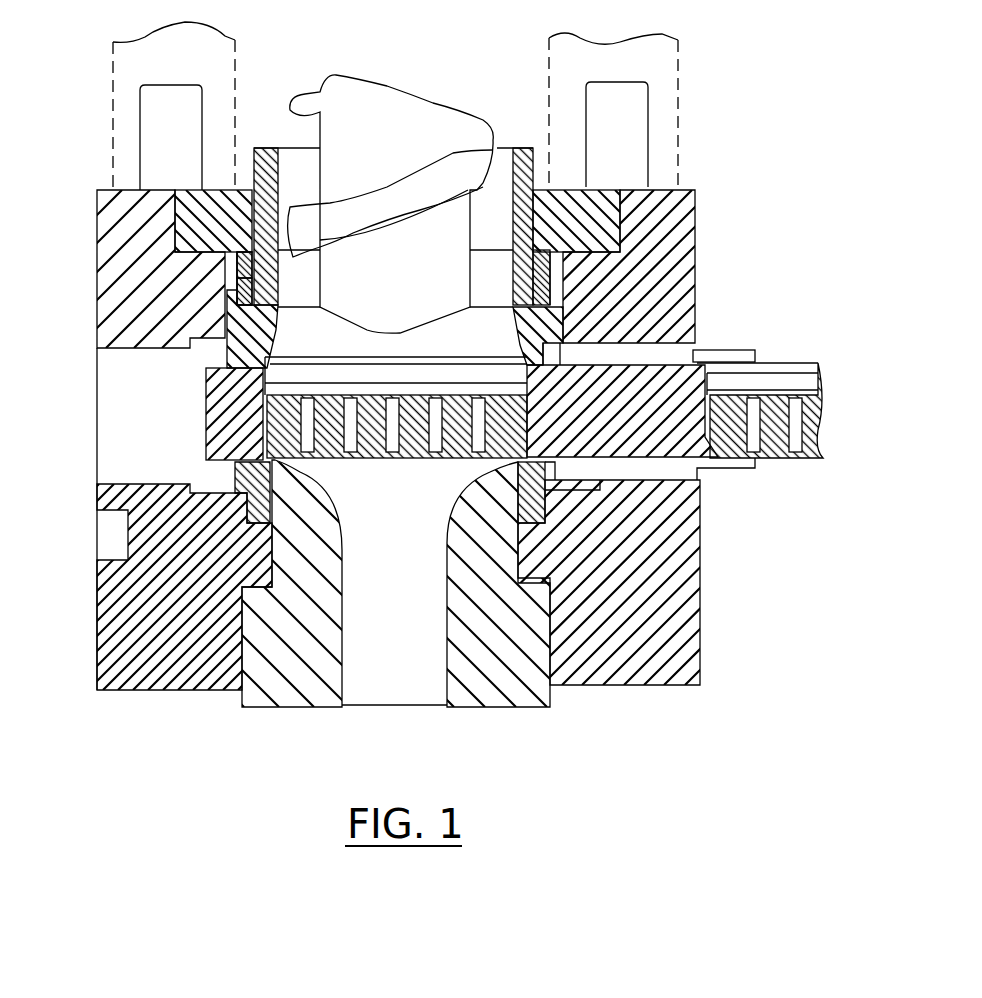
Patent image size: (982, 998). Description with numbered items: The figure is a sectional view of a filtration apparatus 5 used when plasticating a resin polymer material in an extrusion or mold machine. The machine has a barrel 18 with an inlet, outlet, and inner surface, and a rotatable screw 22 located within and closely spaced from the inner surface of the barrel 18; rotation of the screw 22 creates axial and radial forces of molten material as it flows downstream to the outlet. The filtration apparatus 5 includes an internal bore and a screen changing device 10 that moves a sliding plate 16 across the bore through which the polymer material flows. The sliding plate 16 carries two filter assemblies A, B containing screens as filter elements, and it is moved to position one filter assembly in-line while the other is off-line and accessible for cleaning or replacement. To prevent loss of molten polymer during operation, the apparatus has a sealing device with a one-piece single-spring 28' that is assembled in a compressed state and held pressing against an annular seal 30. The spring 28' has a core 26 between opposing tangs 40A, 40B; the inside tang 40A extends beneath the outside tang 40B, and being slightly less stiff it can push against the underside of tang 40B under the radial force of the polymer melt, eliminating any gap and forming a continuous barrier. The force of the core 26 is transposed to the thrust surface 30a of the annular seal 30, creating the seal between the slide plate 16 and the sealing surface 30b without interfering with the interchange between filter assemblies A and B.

The filtration apparatus 5 is at (711, 648).
The screen changing device 10 is at (824, 378).
The sliding plate 16 is at (217, 414).
The barrel 18 is at (650, 63).
The rotatable screw 22 is at (400, 150).
The core 26 is at (542, 283).
The single-spring 28' is at (135, 285).
The annular seal 30 is at (245, 352).
The thrust surface 30a is at (537, 304).
The sealing surface 30b is at (533, 362).
The inside tang 40A is at (258, 262).
The outside tang 40B is at (250, 258).
The filter assembly A is at (433, 462).
The filter assembly B is at (803, 462).